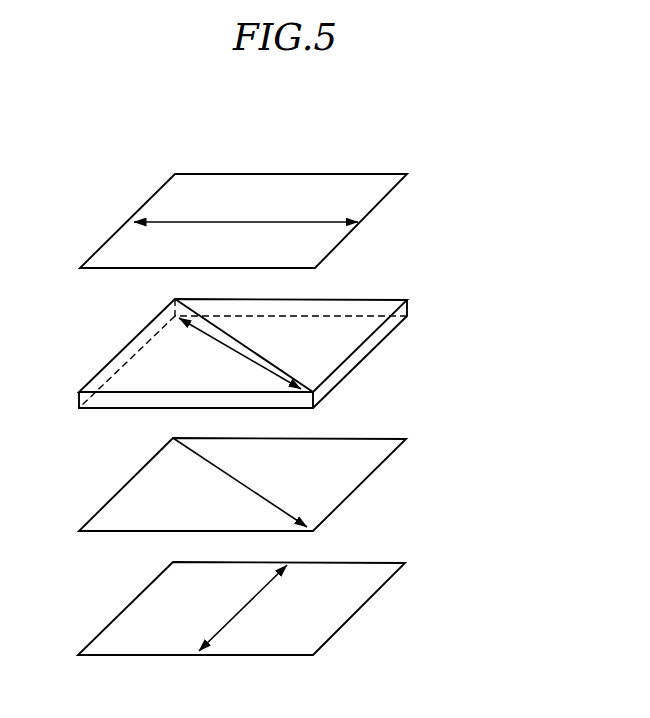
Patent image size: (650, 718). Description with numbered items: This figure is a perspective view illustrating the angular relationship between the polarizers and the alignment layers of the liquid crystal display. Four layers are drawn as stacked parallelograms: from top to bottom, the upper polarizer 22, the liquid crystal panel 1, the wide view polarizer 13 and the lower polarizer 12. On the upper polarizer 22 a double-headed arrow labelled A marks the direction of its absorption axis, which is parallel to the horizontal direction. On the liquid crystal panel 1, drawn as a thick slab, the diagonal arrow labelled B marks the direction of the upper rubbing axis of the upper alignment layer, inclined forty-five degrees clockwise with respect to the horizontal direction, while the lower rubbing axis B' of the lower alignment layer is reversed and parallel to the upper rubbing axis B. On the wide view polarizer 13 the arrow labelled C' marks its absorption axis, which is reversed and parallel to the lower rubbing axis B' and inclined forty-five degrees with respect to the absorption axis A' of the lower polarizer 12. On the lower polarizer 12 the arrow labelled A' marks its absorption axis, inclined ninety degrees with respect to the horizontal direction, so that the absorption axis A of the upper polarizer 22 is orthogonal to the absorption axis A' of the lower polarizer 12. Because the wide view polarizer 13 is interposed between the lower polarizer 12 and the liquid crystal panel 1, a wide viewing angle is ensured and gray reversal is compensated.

The liquid crystal panel 1 is at (378, 337).
The upper polarizer 22 is at (390, 197).
The wide view polarizer 13 is at (373, 473).
The lower polarizer 12 is at (375, 596).
The absorption axis of the upper polarizer A is at (246, 174).
The upper rubbing axis B is at (283, 313).
The lower rubbing axis B' is at (137, 346).
The absorption axis of the wide view polarizer C' is at (182, 482).
The absorption axis of the lower polarizer A' is at (172, 608).